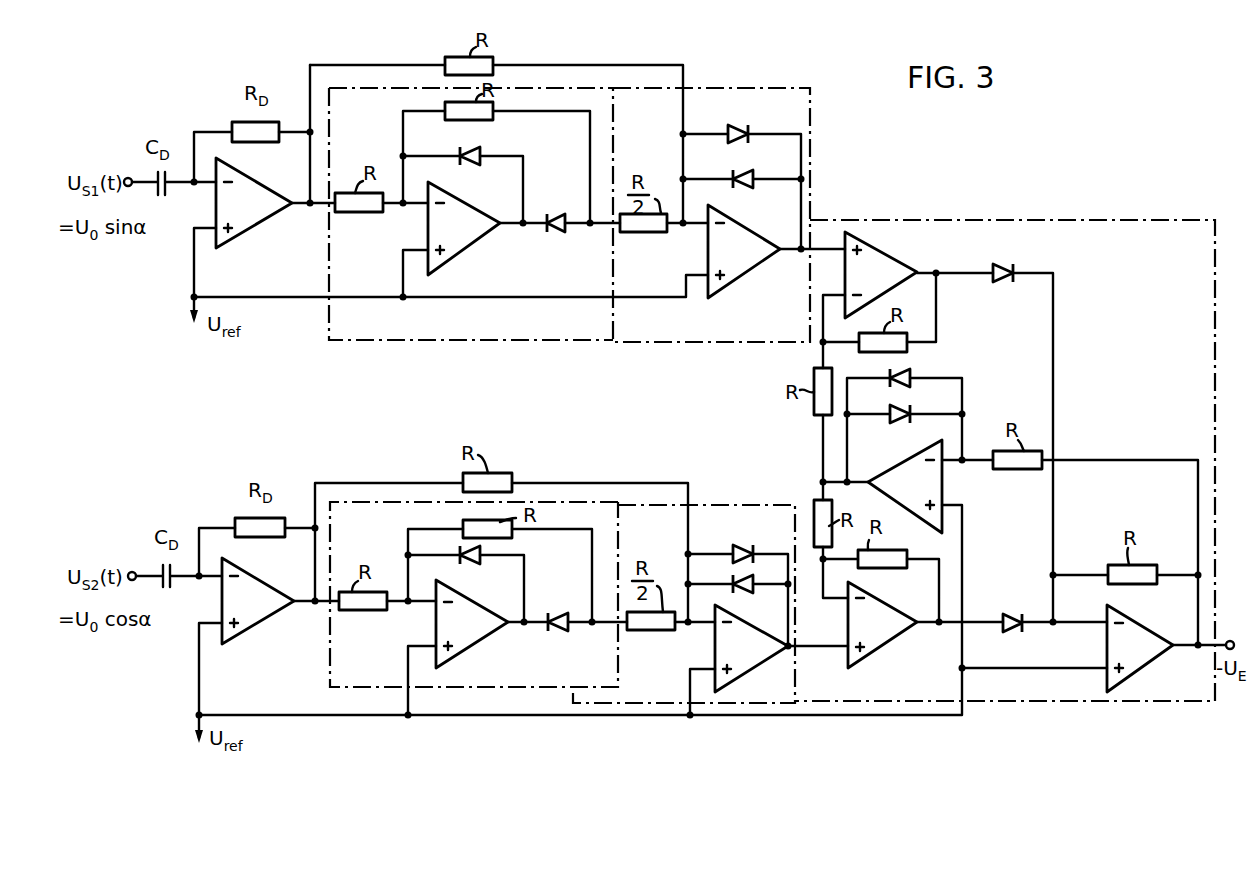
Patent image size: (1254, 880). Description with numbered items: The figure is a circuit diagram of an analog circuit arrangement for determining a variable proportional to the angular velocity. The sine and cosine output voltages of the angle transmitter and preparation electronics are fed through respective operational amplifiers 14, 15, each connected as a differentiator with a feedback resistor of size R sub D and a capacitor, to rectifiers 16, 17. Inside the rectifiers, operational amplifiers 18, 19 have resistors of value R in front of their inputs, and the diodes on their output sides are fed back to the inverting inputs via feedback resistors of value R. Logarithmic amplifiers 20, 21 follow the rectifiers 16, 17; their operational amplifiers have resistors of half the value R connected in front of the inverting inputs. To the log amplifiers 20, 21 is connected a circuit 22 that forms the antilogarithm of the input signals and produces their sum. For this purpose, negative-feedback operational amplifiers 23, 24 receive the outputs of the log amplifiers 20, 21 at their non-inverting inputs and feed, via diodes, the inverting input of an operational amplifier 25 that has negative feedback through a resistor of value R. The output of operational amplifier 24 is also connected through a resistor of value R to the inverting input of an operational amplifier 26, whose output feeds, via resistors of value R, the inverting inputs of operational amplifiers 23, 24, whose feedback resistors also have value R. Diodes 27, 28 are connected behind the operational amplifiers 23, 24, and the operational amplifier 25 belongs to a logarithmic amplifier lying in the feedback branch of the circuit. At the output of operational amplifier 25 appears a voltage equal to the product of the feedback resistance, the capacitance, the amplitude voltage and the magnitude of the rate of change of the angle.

The operational amplifier 14 is at (254, 235).
The operational amplifier 15 is at (258, 626).
The rectifier 16 is at (529, 328).
The rectifier 17 is at (587, 677).
The operational amplifier 18 is at (478, 236).
The operational amplifier 19 is at (470, 641).
The logarithmic amplifier 20 is at (727, 330).
The logarithmic amplifier 21 is at (787, 687).
The circuit 22 is at (1068, 238).
The operational amplifier 23 is at (880, 262).
The operational amplifier 24 is at (880, 637).
The operational amplifier 25 is at (1135, 632).
The operational amplifier 26 is at (935, 482).
The diode 27 is at (1003, 283).
The diode 28 is at (1010, 611).